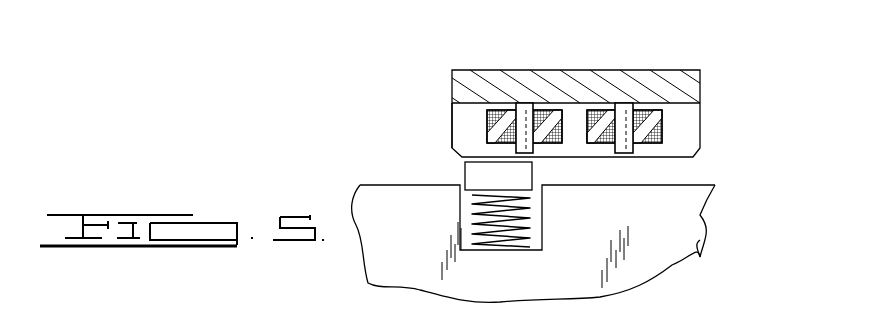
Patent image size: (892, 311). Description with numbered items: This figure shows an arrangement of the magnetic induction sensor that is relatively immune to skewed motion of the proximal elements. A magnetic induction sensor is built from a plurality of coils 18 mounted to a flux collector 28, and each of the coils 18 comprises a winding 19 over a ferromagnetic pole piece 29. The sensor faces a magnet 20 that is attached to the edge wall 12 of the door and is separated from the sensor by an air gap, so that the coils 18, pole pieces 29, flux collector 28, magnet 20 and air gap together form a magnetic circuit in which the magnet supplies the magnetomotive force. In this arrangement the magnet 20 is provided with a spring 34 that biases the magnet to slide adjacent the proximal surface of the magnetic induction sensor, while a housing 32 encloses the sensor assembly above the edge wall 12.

The edge wall 12 is at (686, 263).
The coils 18 is at (452, 132).
The winding 19 is at (550, 105).
The magnet 20 is at (465, 175).
The flux collector 28 is at (700, 84).
The ferromagnetic pole piece 29 is at (523, 110).
The housing 32 is at (452, 112).
The spring 34 is at (472, 223).